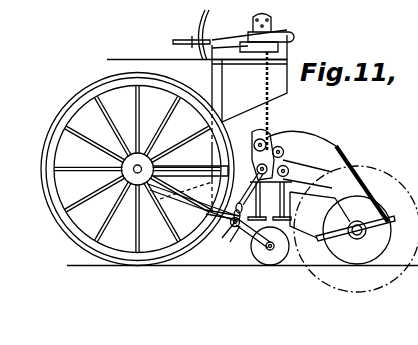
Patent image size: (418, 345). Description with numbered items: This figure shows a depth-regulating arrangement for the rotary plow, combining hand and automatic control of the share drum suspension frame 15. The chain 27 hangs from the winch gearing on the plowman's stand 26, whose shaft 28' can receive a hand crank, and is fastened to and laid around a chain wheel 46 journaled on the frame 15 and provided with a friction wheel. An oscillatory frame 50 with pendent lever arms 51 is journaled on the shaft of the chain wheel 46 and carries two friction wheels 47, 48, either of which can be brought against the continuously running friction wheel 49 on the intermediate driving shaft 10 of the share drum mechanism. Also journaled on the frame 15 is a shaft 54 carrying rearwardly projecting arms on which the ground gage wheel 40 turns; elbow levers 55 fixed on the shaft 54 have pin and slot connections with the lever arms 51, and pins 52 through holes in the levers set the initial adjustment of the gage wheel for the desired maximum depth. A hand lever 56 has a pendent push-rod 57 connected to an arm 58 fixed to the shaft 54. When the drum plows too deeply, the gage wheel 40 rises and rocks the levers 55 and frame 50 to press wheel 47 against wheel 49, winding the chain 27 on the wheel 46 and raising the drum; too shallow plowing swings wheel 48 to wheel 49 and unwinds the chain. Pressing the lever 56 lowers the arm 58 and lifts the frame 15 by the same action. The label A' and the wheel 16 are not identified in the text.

The frame A' is at (94, 6).
The intermediate driving shaft 10 is at (285, 150).
The suspension frame 15 is at (320, 215).
The wheel 16 is at (356, 229).
The stand 26 is at (249, 78).
The chain 27 is at (281, 101).
The shaft 28' is at (256, 31).
The ground gage wheel 40 is at (262, 257).
The chain wheel 46 is at (324, 202).
The friction wheel 47 is at (256, 146).
The friction wheel 48 is at (289, 172).
The friction wheel 49 is at (289, 156).
The oscillatory frame 50 is at (212, 168).
The pendent lever arms 51 is at (240, 196).
The pins 52 is at (244, 233).
The shaft 54 is at (226, 239).
The elbow levers 55 is at (222, 211).
The hand lever 56 is at (186, 35).
The push-rod 57 is at (137, 155).
The arm 58 is at (193, 206).